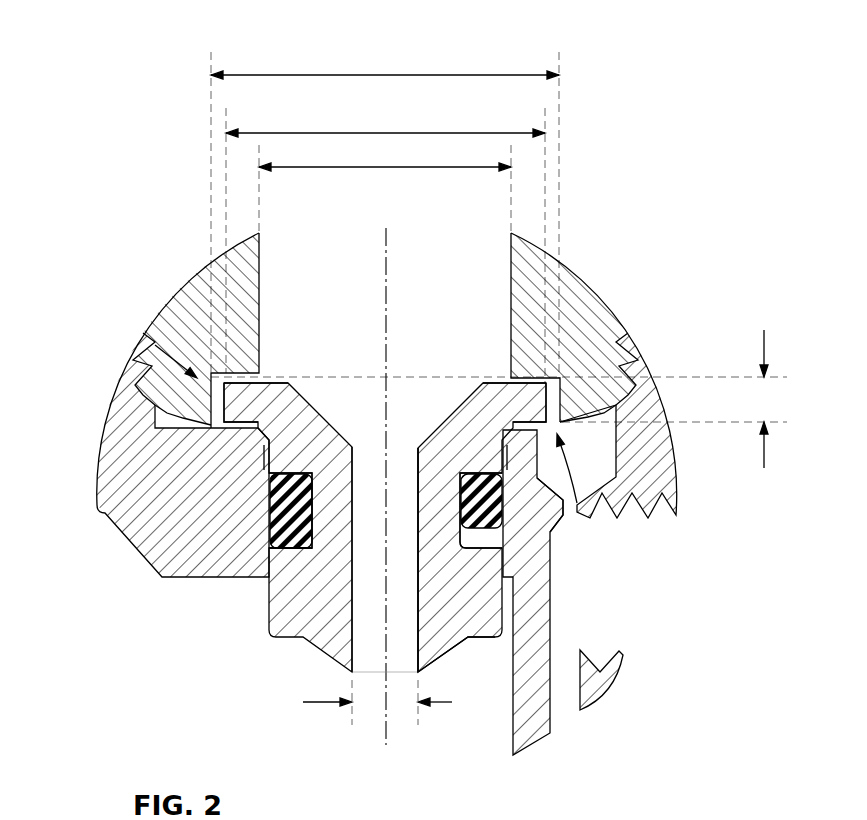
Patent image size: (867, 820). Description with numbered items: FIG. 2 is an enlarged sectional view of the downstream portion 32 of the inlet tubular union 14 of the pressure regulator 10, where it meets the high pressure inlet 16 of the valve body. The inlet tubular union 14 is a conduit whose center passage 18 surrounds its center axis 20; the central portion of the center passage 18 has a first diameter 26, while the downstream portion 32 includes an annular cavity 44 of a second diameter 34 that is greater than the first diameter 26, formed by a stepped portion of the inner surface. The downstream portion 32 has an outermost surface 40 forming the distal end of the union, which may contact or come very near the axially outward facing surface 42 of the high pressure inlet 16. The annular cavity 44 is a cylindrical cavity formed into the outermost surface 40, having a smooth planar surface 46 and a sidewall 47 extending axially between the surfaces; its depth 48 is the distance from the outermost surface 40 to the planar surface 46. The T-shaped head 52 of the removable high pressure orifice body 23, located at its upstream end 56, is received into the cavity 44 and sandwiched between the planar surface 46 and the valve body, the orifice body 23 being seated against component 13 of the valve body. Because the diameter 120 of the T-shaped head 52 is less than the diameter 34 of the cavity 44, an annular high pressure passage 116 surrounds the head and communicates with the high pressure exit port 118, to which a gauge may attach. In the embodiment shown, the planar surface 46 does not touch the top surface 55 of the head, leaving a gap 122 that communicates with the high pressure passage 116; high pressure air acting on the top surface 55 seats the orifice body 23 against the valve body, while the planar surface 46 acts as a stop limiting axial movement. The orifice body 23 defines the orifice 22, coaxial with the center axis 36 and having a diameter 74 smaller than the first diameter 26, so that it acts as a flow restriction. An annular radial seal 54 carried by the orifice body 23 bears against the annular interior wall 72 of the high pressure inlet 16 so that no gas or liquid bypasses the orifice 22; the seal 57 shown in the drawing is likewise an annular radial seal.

The dispensing closure assembly 10 is at (728, 106).
The component 13 is at (187, 572).
The inlet tubular union 14 is at (205, 292).
The high pressure inlet 16 is at (478, 540).
The center passage 18 is at (326, 272).
The center axis 20 is at (387, 243).
The orifice 22 is at (443, 620).
The removable high pressure orifice body 23 is at (402, 573).
The first diameter 26 is at (458, 168).
The downstream portion 32 is at (138, 341).
The second diameter 34 is at (430, 74).
The center axis 36 is at (385, 728).
The outermost surface 40 is at (187, 425).
The axially outward facing surface 42 is at (200, 428).
The annular cavity 44 is at (570, 528).
The planar surface 46 is at (157, 407).
The sidewall 47 is at (550, 414).
The depth 48 is at (764, 330).
The T-shaped head 52 is at (353, 458).
The annular radial seal 54 is at (268, 547).
The top surface 55 is at (286, 382).
The upstream end 56 is at (273, 381).
The seal ring 57 is at (271, 478).
The annular interior wall 72 is at (271, 547).
The diameter 74 is at (305, 703).
The high pressure passage 116 is at (549, 395).
The high pressure exit port 118 is at (555, 533).
The diameter 120 is at (386, 132).
The gap 122 is at (532, 382).